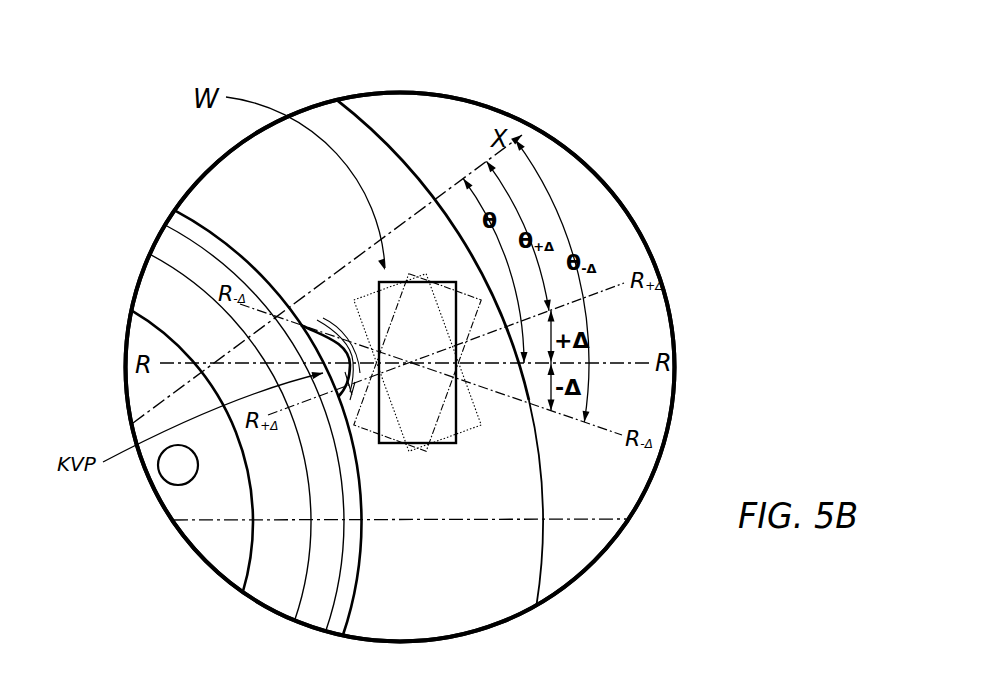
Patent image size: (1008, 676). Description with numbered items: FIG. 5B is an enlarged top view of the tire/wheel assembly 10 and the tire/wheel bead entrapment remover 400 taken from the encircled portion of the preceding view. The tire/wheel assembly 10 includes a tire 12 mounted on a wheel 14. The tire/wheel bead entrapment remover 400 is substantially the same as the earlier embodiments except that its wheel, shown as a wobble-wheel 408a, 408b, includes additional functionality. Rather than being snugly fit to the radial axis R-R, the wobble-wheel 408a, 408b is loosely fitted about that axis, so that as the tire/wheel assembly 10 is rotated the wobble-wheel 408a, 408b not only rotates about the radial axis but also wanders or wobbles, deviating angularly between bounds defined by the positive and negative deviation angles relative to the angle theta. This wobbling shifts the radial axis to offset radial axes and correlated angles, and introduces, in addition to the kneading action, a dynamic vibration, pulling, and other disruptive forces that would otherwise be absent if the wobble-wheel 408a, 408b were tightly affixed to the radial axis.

The tire/wheel bead entrapment remover 400 is at (690, 117).
The tire/wheel assembly 10 is at (553, 483).
The tire 12 is at (379, 135).
The wheel 14 is at (160, 300).
The wobble-wheel 408a is at (448, 445).
The wobble-wheel 408b is at (447, 394).